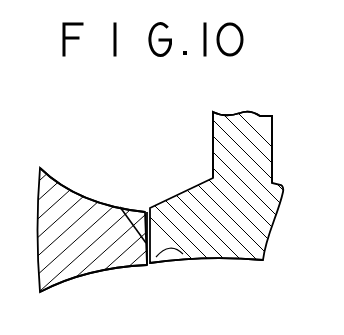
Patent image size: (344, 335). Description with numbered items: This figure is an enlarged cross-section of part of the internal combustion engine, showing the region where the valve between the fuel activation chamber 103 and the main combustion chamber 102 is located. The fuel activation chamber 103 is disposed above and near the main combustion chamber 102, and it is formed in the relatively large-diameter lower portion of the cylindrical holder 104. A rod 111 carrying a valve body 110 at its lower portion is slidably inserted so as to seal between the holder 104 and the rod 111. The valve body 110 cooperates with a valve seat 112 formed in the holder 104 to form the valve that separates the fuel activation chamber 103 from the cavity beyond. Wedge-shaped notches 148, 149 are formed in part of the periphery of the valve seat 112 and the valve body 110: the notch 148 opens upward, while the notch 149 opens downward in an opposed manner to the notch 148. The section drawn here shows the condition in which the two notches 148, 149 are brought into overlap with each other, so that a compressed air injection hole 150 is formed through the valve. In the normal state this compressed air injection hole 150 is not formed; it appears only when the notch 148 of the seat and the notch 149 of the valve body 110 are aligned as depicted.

The main combustion chamber 102 is at (108, 322).
The fuel activation chamber 103 is at (97, 160).
The cylindrical holder 104 is at (59, 264).
The valve body 110 is at (228, 256).
The rod 111 is at (257, 152).
The valve seat 112 is at (157, 268).
The notch 148 is at (134, 210).
The notch 149 is at (184, 258).
The compressed air injection hole 150 is at (165, 266).